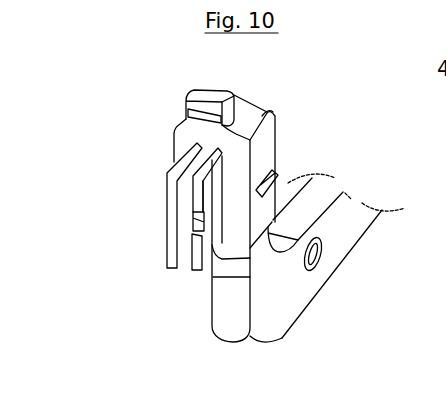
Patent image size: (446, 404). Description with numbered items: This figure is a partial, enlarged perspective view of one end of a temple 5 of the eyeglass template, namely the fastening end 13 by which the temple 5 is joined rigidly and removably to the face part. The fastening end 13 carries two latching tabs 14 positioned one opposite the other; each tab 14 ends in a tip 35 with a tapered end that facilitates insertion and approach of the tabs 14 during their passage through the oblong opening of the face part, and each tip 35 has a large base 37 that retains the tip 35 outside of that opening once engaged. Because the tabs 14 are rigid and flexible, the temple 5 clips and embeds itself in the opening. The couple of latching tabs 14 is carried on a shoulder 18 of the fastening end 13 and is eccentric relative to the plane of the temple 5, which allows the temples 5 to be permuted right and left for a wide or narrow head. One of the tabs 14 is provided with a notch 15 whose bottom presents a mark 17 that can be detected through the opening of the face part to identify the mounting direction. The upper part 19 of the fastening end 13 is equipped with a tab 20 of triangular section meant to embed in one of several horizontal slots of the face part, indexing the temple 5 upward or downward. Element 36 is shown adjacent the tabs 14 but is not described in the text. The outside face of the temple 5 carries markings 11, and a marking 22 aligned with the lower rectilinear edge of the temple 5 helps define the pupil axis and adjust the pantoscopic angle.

The temple 5 is at (160, 268).
The markings 11 is at (322, 262).
The fastening end 13 is at (177, 152).
The latching tabs 14 is at (196, 194).
The notch 15 is at (200, 216).
The mark 17 is at (195, 268).
The shoulder 18 is at (267, 123).
The upper part 19 is at (202, 94).
The tab 20 is at (197, 111).
The marking 22 is at (270, 175).
The tip 35 is at (222, 165).
The inner contact arm 36 is at (203, 197).
The large base 37 is at (170, 176).